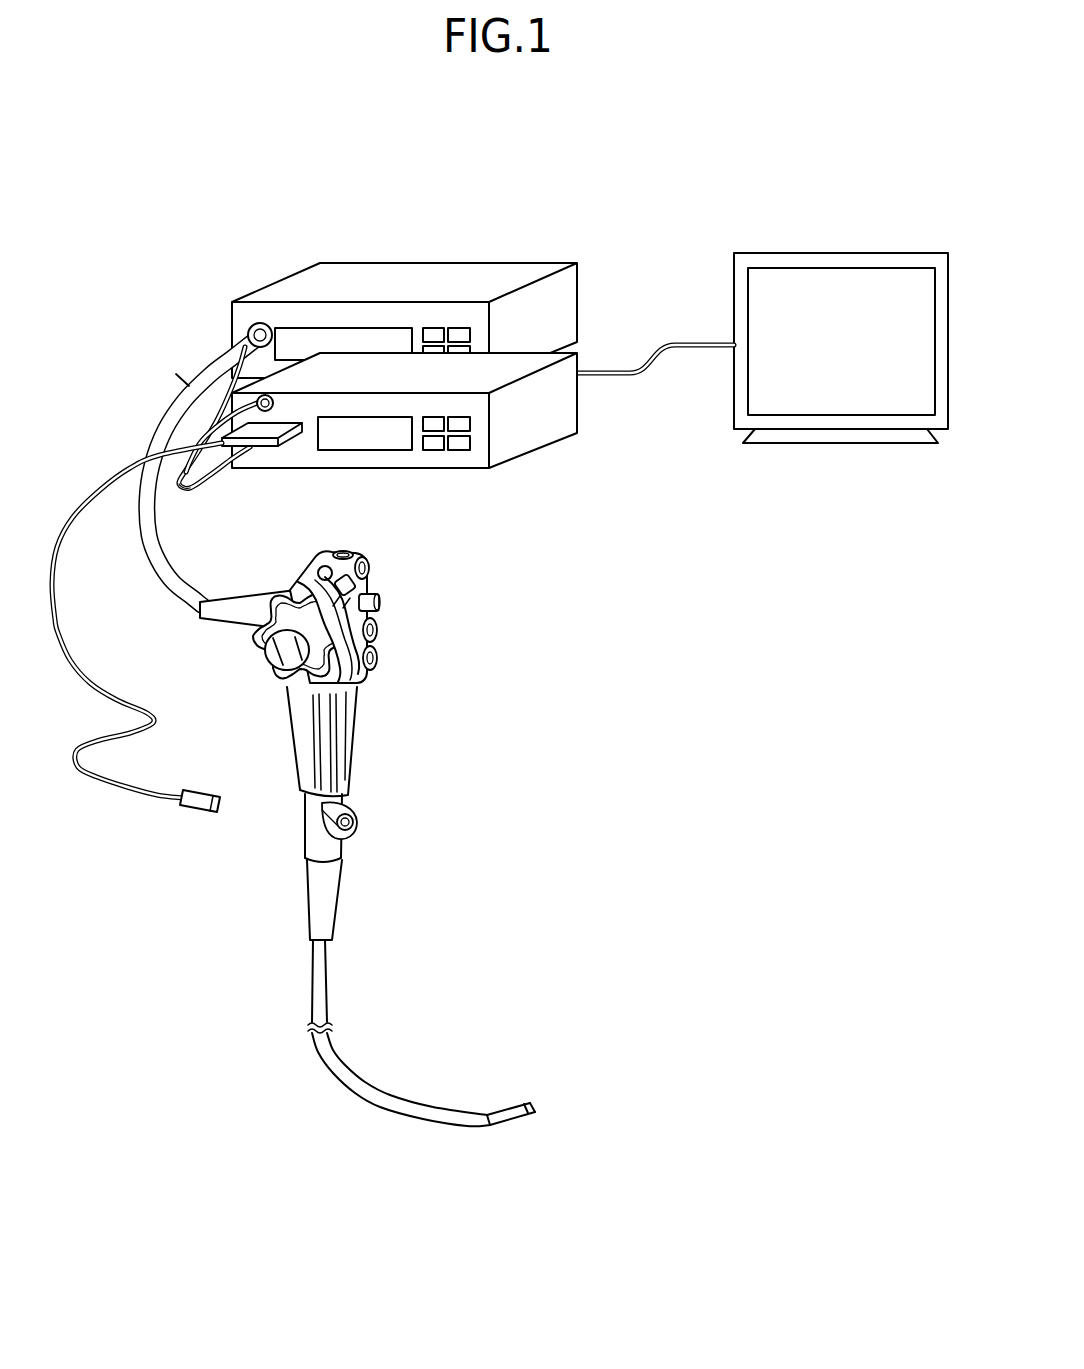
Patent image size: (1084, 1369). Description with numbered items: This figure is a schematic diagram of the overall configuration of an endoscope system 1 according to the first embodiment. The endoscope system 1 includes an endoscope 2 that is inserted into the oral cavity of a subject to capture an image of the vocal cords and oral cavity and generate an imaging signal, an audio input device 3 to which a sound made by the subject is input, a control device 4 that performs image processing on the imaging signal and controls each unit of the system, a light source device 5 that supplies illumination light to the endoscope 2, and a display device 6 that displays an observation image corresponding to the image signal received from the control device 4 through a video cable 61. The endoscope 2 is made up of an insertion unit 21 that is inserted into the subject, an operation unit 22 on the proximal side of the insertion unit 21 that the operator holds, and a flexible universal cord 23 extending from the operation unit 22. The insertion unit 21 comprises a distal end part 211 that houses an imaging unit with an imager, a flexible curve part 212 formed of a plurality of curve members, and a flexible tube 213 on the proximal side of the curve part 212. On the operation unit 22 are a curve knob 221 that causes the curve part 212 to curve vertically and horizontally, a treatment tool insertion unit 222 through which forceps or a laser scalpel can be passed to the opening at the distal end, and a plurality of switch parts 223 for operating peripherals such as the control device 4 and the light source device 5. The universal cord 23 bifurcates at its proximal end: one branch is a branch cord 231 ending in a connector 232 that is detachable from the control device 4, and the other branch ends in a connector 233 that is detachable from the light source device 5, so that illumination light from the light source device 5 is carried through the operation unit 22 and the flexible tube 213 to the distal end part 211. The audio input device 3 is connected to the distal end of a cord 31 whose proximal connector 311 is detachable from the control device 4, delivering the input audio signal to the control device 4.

The endoscope system 1 is at (890, 176).
The endoscope 2 is at (440, 573).
The audio input device 3 is at (195, 808).
The control device 4 is at (565, 389).
The light source device 5 is at (565, 301).
The display device 6 is at (842, 260).
The video cable 61 is at (697, 341).
The insertion unit 21 is at (395, 1080).
The distal end part 211 is at (528, 1117).
The curve part 212 is at (508, 1107).
The flexible tube 213 is at (368, 1098).
The operation unit 22 is at (327, 553).
The curve knob 221 is at (262, 662).
The treatment tool insertion unit 222 is at (358, 817).
The switch parts 223 is at (383, 657).
The universal cord 23 is at (150, 563).
The branch cord 231 is at (192, 487).
The connector 232 is at (254, 447).
The connector 233 is at (258, 330).
The cord 31 is at (157, 717).
The connector 311 is at (272, 402).